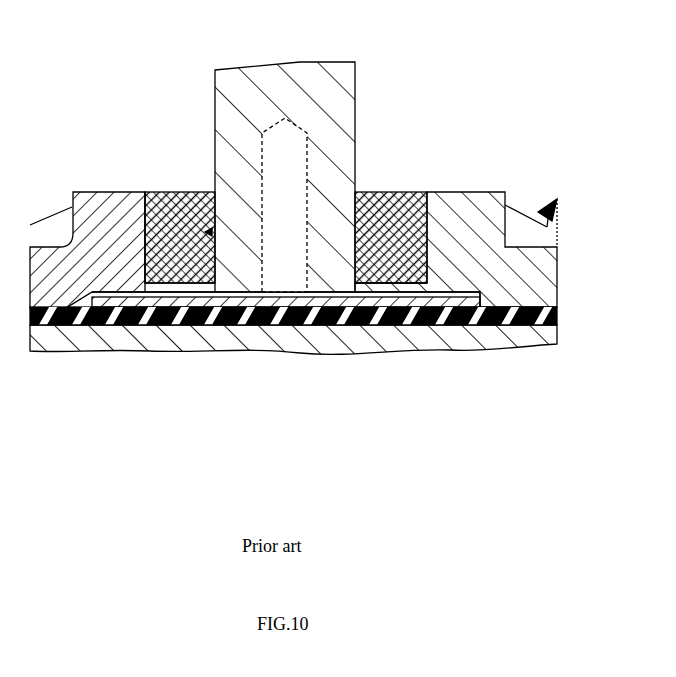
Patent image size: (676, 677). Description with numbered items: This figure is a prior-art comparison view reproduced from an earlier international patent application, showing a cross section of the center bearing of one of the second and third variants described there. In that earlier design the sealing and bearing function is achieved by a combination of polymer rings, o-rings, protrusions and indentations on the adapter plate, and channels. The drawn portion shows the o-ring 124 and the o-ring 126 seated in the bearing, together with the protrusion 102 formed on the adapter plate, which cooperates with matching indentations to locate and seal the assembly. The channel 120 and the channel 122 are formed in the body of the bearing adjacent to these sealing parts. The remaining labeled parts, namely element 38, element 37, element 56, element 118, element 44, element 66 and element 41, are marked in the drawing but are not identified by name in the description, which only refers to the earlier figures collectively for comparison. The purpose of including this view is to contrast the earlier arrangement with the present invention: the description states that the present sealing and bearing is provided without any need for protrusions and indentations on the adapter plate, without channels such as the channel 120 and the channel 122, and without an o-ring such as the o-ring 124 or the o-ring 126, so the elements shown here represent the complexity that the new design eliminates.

The gap / seal pocket 38 is at (200, 178).
The second body member 37 is at (413, 173).
The post 56 is at (358, 124).
The seal 118 is at (183, 192).
The channel 122 is at (142, 200).
The o-ring 124 is at (207, 232).
The o-ring 126 is at (110, 217).
The protrusion 102 is at (163, 193).
The channel 120 is at (205, 328).
The membrane layer 44 is at (514, 340).
The substrate layer 66 is at (350, 347).
The base 41 is at (500, 297).